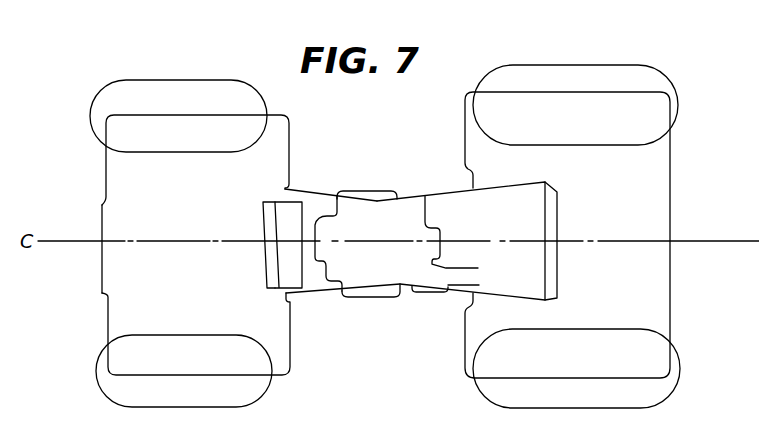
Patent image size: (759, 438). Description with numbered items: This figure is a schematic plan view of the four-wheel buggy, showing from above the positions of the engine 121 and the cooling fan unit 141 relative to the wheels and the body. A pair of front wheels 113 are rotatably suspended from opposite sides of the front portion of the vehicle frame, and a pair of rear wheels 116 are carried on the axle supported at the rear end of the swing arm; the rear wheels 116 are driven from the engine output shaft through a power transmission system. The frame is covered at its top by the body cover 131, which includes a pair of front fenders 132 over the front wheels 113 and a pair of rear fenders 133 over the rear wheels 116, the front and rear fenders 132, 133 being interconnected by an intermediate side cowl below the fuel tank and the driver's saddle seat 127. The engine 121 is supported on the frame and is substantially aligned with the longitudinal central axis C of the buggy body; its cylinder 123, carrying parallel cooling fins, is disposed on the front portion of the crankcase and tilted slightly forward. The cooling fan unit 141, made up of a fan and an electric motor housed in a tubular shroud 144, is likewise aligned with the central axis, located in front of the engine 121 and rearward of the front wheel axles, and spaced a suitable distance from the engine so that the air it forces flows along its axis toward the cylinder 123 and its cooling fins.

The body cover 131 is at (169, 243).
The front fenders 132 is at (137, 122).
The front wheels 113 is at (197, 86).
The rear fenders 133 is at (548, 98).
The rear wheels 116 is at (612, 75).
The cooling fan unit 141 is at (274, 216).
The tubular shroud 144 is at (292, 210).
The engine 121 is at (383, 190).
The cylinder 123 is at (314, 262).
The driver's saddle seat 127 is at (538, 214).